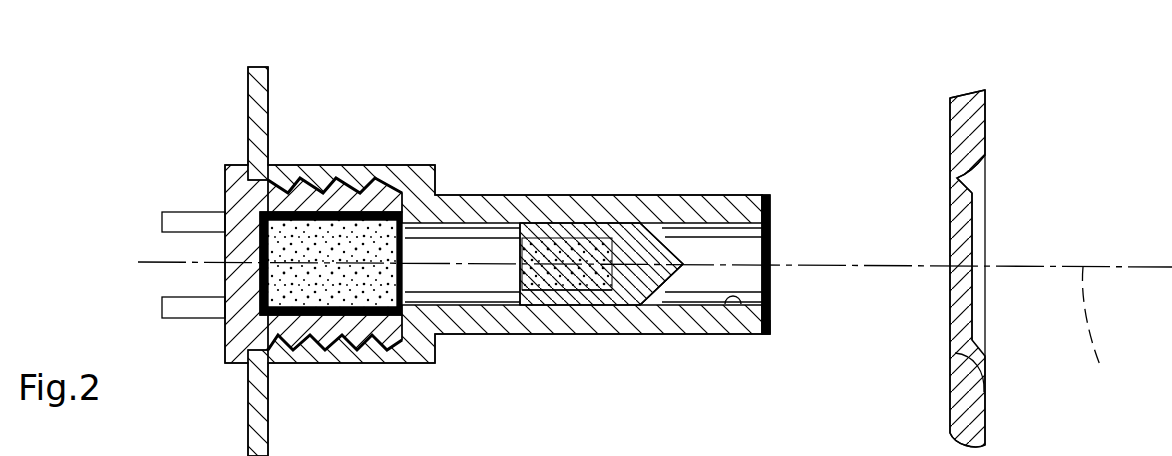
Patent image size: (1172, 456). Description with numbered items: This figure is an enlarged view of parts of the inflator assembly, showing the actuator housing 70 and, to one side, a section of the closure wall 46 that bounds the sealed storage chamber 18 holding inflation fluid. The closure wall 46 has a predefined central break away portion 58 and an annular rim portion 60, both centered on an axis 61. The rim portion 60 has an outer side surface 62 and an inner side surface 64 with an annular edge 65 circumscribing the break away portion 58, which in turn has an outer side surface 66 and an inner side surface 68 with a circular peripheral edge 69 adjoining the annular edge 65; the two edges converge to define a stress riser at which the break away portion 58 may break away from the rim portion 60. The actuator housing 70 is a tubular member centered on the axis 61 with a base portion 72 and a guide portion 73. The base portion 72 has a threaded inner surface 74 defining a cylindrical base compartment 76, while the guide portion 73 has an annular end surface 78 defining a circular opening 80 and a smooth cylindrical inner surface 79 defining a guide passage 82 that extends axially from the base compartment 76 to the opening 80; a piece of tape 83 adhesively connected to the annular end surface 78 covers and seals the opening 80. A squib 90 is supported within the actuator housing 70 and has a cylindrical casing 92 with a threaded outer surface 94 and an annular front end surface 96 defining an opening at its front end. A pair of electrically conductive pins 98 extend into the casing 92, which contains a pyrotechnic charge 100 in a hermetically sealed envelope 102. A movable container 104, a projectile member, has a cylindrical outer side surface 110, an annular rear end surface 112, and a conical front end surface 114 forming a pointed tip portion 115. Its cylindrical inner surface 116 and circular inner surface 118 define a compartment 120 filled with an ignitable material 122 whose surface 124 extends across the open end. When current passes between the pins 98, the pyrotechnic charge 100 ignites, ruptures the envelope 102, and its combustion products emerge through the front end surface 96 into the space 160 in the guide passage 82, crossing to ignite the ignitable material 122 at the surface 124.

The storage chamber 18 is at (1112, 212).
The closure wall 46 is at (986, 92).
The break away portion 58 is at (960, 306).
The rim portion 60 is at (967, 122).
The axis 61 is at (1108, 328).
The outer side surface 62 is at (950, 155).
The inner side surface 64 is at (985, 140).
The annular edge 65 is at (973, 165).
The outer side surface 66 is at (950, 255).
The inner side surface 68 is at (972, 238).
The circular peripheral edge 69 is at (963, 182).
The actuator housing 70 is at (345, 164).
The base portion 72 is at (395, 178).
The guide portion 73 is at (607, 204).
The threaded inner surface 74 is at (363, 195).
The base compartment 76 is at (290, 198).
The annular end surface 78 is at (768, 200).
The cylindrical inner surface 79 is at (740, 311).
The circular opening 80 is at (770, 257).
The guide passage 82 is at (747, 251).
The tape 83 is at (770, 326).
The squib 90 is at (225, 283).
The casing 92 is at (247, 320).
The threaded outer surface 94 is at (311, 188).
The front end surface 96 is at (405, 200).
The electrically conductive pins 98 is at (200, 222).
The pyrotechnic charge 100 is at (340, 275).
The envelope 102 is at (370, 315).
The movable container 104 is at (647, 305).
The cylindrical outer side surface 110 is at (550, 308).
The annular rear end surface 112 is at (508, 213).
The conical front end surface 114 is at (645, 240).
The pointed tip portion 115 is at (686, 266).
The cylindrical inner surface 116 is at (584, 251).
The circular inner surface 118 is at (590, 282).
The compartment 120 is at (523, 252).
The ignitable material 122 is at (520, 272).
The surface 124 is at (518, 282).
The space 160 is at (458, 225).